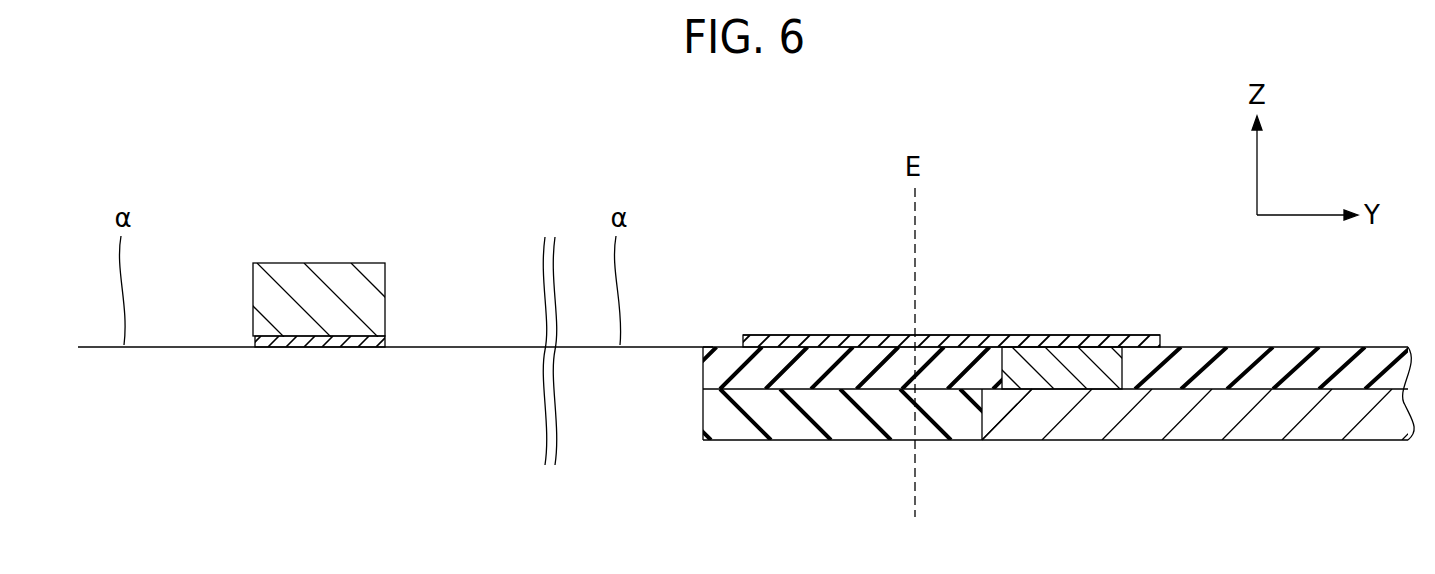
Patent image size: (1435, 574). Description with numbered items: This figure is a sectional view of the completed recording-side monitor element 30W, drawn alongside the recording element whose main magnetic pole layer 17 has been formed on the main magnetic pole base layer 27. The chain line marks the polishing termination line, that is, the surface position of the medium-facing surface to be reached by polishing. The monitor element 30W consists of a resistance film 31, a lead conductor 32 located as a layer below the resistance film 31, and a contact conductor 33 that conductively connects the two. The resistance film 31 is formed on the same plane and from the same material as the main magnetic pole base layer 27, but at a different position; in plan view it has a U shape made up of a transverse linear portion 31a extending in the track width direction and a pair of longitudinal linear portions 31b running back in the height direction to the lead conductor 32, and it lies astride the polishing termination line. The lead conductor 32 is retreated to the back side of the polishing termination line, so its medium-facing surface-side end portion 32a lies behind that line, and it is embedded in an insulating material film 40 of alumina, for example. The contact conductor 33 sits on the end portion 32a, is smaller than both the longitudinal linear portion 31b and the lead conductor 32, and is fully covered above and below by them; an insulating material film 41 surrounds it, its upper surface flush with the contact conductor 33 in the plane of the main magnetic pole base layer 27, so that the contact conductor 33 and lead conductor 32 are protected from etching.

The main magnetic pole layer 17 is at (321, 291).
The main magnetic pole base layer 27 is at (317, 350).
The recording-side monitor element 30W is at (1126, 258).
The resistance film 31 is at (981, 329).
The transverse linear portion 31a is at (802, 340).
The longitudinal linear portions 31b is at (1062, 335).
The lead conductor 32 is at (1325, 422).
The medium-facing surface-side end portion 32a is at (1008, 422).
The contact conductor 33 is at (1058, 372).
The insulating material film 40 is at (870, 423).
The insulating material film 41 is at (800, 376).